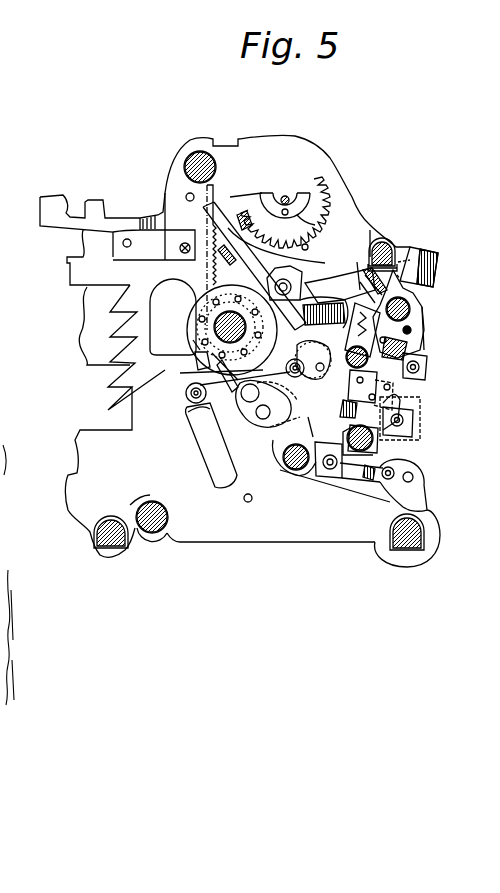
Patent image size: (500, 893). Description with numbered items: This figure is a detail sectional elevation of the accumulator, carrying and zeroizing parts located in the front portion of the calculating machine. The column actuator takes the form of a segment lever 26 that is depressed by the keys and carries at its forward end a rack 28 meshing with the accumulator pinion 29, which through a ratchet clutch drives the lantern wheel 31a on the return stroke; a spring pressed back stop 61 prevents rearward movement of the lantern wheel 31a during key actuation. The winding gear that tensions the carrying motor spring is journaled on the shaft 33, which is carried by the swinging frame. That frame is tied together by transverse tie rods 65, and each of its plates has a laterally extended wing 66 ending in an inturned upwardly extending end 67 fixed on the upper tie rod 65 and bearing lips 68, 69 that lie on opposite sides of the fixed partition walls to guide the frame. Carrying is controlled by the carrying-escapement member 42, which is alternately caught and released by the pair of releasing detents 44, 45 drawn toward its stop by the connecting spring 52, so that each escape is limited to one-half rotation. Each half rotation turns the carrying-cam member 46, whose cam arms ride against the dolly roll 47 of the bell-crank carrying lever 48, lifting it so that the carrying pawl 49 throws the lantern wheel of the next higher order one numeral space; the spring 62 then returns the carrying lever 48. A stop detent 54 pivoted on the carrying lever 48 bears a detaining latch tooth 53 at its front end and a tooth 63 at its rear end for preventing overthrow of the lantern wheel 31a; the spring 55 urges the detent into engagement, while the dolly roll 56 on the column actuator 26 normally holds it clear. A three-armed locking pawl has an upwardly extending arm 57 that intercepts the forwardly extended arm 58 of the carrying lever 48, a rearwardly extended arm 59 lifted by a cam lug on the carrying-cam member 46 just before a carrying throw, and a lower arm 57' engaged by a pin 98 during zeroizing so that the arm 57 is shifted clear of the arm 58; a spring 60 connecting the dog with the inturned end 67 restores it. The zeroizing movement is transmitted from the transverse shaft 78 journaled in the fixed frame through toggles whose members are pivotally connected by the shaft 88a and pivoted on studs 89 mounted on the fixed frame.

The column actuator 26 is at (72, 274).
The rack 28 is at (218, 216).
The accumulator pinion 29 is at (193, 320).
The lantern wheel 31a is at (178, 342).
The shaft 33 is at (254, 271).
The carrying-escapement member 42 is at (393, 387).
The releasing detent 44 is at (390, 363).
The releasing detent 45 is at (375, 447).
The carrying-cam member 46 is at (321, 363).
The dolly roll 47 is at (225, 380).
The bell-crank carrying-lever 48 is at (310, 293).
The carrying-pawl 49 is at (270, 412).
The connecting spring 52 is at (383, 437).
The detaining latch tooth 53 is at (323, 475).
The stop detent 54 is at (200, 382).
The spring 55 is at (262, 440).
The dolly-roll 56 is at (190, 398).
The upwardly extending arm of three-armed locking pawl 57 is at (404, 326).
The lower arm of three-armed dog 57' is at (419, 412).
The forwardly extended arm of carrying lever 58 is at (362, 288).
The rearwardly extended arm of three-armed pawl 59 is at (324, 312).
The spring 60 is at (410, 347).
The spring pressed back stop 61 is at (210, 285).
The spring 62 is at (325, 295).
The tooth 63 is at (200, 355).
The tie-rods 65 is at (404, 302).
The laterally extended wing 66 is at (430, 337).
The inturned upwardly extending end 67 is at (412, 326).
The lip 68 is at (393, 275).
The lip 69 is at (364, 244).
The transverse shaft 78 is at (157, 537).
The shaft 88a is at (383, 492).
The studs 89 is at (413, 478).
The pins 98 is at (413, 420).